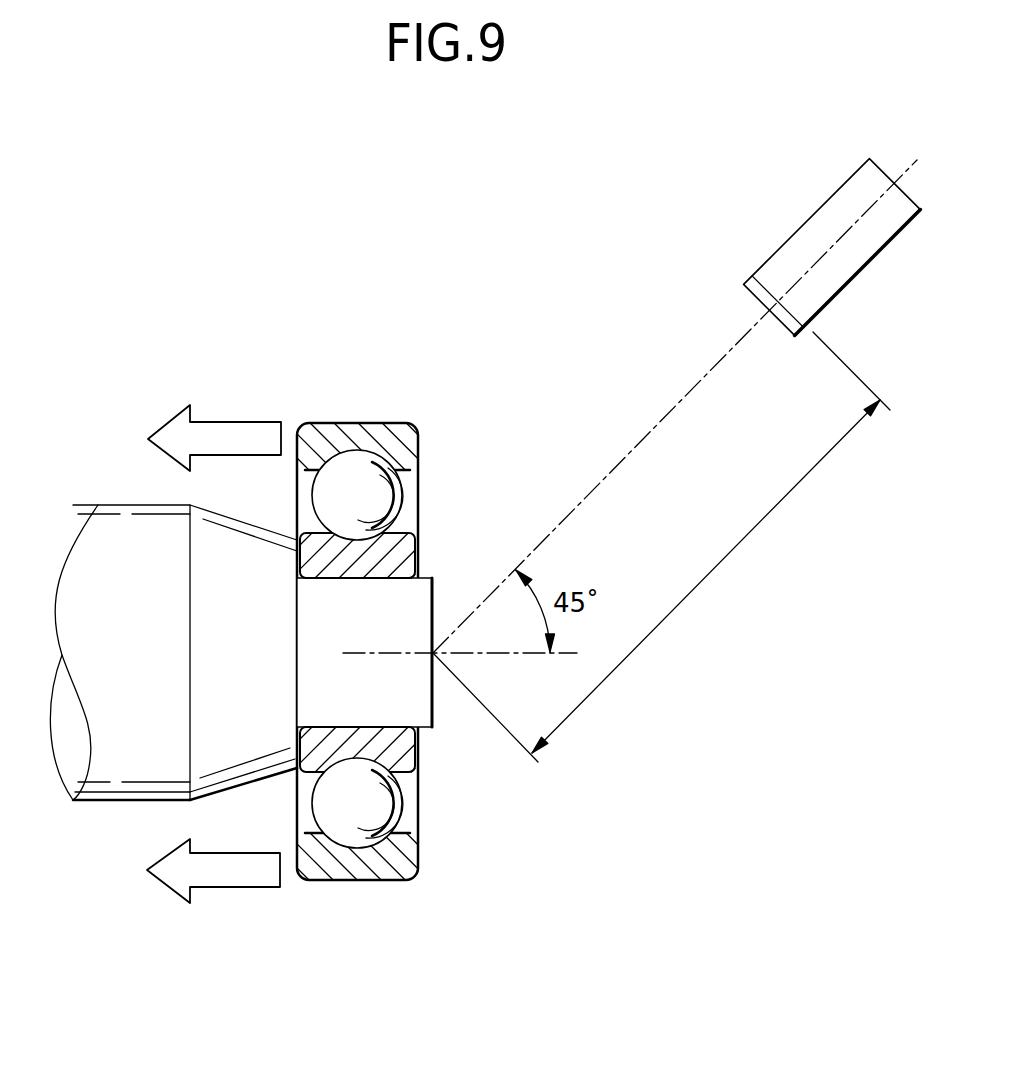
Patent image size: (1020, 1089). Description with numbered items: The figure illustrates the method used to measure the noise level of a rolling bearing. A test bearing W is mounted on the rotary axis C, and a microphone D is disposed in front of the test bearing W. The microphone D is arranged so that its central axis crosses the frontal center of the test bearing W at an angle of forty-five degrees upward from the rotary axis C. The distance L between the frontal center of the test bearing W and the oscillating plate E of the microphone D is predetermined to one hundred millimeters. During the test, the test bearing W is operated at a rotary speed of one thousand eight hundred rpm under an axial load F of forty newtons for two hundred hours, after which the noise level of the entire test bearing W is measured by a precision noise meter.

The rotary axis C is at (91, 510).
The test bearing W is at (440, 858).
The axial load F is at (214, 658).
The distance L is at (661, 547).
The microphone D is at (800, 204).
The oscillating plate E is at (755, 294).